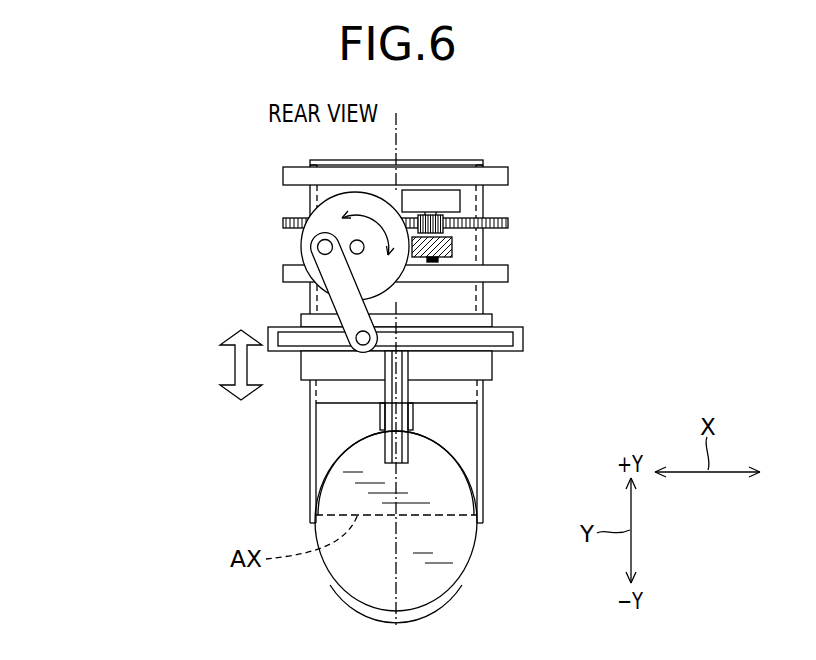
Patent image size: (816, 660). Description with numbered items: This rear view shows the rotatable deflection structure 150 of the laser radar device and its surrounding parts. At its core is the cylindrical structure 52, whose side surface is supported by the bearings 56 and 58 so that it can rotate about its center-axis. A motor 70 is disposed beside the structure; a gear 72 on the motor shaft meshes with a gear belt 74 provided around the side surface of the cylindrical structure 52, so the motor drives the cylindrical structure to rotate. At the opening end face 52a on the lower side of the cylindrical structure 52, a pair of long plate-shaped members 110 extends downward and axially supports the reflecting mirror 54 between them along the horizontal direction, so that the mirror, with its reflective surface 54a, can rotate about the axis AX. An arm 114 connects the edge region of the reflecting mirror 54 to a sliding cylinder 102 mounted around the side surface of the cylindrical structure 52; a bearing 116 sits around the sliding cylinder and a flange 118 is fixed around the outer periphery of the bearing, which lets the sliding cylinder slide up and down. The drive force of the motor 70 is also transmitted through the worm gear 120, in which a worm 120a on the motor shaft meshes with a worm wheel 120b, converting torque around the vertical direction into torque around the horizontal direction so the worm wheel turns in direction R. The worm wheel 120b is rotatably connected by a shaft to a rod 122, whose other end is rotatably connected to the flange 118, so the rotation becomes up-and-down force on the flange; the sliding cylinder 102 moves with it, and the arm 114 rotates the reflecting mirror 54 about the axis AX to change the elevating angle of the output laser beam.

The cylindrical structure 52 is at (318, 206).
The opening end face 52a is at (443, 404).
The reflecting mirror 54 is at (469, 569).
The reflective surface 54a is at (372, 577).
The bearing 56 is at (282, 177).
The bearing 58 is at (282, 274).
The motor 70 is at (483, 200).
The gear 72 is at (445, 232).
The gear belt 74 is at (508, 222).
The sliding cylinder 102 is at (492, 367).
The plate-shaped member 110 is at (310, 477).
The arm 114 is at (385, 418).
The bearing 116 is at (507, 327).
The flange 118 is at (523, 337).
The worm gear 120 is at (589, 238).
The worm 120a is at (452, 251).
The worm wheel 120b is at (412, 297).
The rod 122 is at (320, 302).
The rotatable deflection structure 150 is at (250, 237).